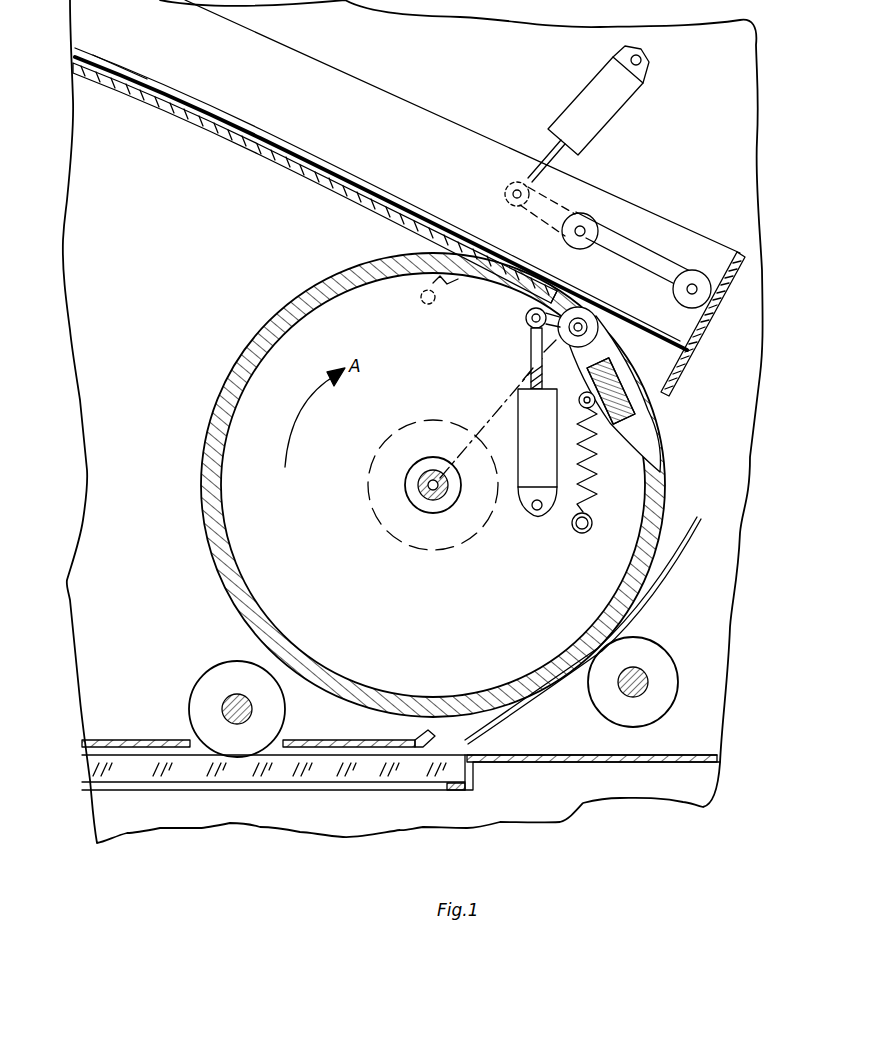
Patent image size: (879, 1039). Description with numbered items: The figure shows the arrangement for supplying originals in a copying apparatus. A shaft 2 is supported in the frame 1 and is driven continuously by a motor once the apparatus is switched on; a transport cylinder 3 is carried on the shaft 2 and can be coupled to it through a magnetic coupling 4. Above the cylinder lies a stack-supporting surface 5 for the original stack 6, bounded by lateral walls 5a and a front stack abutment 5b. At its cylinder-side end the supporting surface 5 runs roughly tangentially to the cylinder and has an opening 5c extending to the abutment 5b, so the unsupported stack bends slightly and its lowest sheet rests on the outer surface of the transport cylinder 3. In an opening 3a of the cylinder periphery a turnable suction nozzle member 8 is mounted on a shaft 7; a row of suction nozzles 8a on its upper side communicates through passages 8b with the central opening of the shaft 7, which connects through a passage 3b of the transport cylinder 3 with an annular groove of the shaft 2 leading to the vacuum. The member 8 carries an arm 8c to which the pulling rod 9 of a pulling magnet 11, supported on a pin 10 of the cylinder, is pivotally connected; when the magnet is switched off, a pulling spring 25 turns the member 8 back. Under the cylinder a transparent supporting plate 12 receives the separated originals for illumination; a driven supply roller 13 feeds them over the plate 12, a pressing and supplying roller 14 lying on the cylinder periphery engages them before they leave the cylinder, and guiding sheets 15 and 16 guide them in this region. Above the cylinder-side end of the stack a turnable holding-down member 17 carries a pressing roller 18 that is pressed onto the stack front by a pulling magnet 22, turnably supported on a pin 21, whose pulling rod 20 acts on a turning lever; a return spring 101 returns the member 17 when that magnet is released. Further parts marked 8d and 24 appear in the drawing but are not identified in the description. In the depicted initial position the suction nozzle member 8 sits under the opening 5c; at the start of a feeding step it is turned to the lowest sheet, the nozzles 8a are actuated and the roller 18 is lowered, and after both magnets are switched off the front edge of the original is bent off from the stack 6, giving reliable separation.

The frame 1 is at (87, 320).
The shaft 2 is at (413, 500).
The transport cylinder 3 is at (257, 337).
The opening 3a is at (643, 413).
The passage 3b is at (498, 415).
The magnetic coupling 4 is at (428, 552).
The stack-supporting surface 5 is at (227, 130).
The lateral walls 5a is at (277, 53).
The front stack abutment 5b is at (670, 385).
The opening 5c is at (436, 228).
The original stack 6 is at (280, 143).
The shaft 7 is at (597, 334).
The suction nozzle member 8 is at (579, 385).
The suction nozzles 8a is at (622, 385).
The passages 8b is at (577, 368).
The arm 8c is at (526, 326).
The pawl arm 8d is at (630, 455).
The pulling rod 9 is at (531, 343).
The pin 10 is at (537, 510).
The pulling magnet 11 is at (525, 465).
The transparent supporting plate 12 is at (308, 772).
The supply roller 13 is at (217, 683).
The pressing and supplying roller 14 is at (655, 653).
The guiding sheet 15 is at (505, 712).
The guiding sheet 16 is at (167, 740).
The holding-down member 17 is at (623, 253).
The pressing roller 18 is at (705, 283).
The pulling rod 20 is at (553, 153).
The pin 21 is at (642, 60).
The pulling magnet 22 is at (600, 110).
The spring anchor 24 is at (583, 533).
The pulling spring 25 is at (595, 488).
The return spring 101 is at (520, 210).